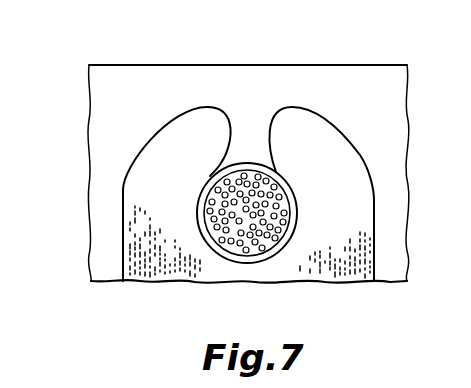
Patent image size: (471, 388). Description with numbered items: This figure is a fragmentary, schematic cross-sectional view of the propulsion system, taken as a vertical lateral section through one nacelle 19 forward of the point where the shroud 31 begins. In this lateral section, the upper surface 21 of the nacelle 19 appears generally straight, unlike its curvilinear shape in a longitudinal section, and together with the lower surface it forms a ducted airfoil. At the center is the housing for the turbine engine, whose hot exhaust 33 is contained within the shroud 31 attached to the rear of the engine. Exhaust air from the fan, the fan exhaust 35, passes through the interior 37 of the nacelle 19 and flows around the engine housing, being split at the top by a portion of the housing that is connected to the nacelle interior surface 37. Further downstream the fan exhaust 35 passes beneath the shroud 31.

The nacelle 19 is at (99, 253).
The upper surface 21 is at (213, 64).
The shroud 31 is at (266, 254).
The hot exhaust 33 is at (247, 193).
The fan exhaust 35 is at (337, 166).
The nacelle interior surface 37 is at (153, 156).